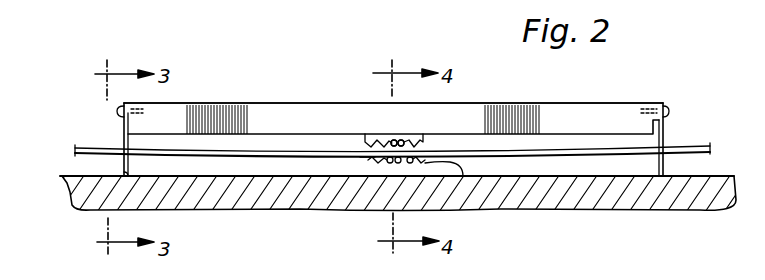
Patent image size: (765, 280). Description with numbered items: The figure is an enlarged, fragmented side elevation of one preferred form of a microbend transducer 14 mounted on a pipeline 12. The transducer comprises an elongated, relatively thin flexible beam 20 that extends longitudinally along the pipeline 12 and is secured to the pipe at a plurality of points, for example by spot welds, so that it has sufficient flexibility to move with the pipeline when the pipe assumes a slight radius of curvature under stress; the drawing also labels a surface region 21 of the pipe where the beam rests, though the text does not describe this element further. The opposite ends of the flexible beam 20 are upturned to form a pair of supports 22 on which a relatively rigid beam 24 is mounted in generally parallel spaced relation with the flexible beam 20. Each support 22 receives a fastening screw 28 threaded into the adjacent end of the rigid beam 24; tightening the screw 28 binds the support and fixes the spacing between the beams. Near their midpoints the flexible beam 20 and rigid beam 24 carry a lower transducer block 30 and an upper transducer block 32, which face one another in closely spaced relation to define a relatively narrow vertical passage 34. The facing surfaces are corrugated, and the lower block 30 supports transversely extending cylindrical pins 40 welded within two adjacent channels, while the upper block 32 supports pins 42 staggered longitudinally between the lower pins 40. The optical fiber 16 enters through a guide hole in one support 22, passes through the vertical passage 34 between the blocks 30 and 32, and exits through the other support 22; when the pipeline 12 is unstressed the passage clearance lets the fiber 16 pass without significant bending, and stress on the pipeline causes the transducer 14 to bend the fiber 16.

The pipeline 12 is at (688, 203).
The microbend transducer 14 is at (615, 95).
The optical fiber 16 is at (217, 149).
The flexible beam 20 is at (581, 177).
The base top surface 21 is at (667, 176).
The supports 22 is at (124, 143).
The rigid beam 24 is at (527, 112).
The fastening screw 28 is at (118, 110).
The lower transducer block 30 is at (463, 176).
The upper transducer block 32 is at (370, 134).
The vertical passage 34 is at (348, 165).
The cylindrical pins 40 is at (377, 163).
The pins 42 is at (403, 139).